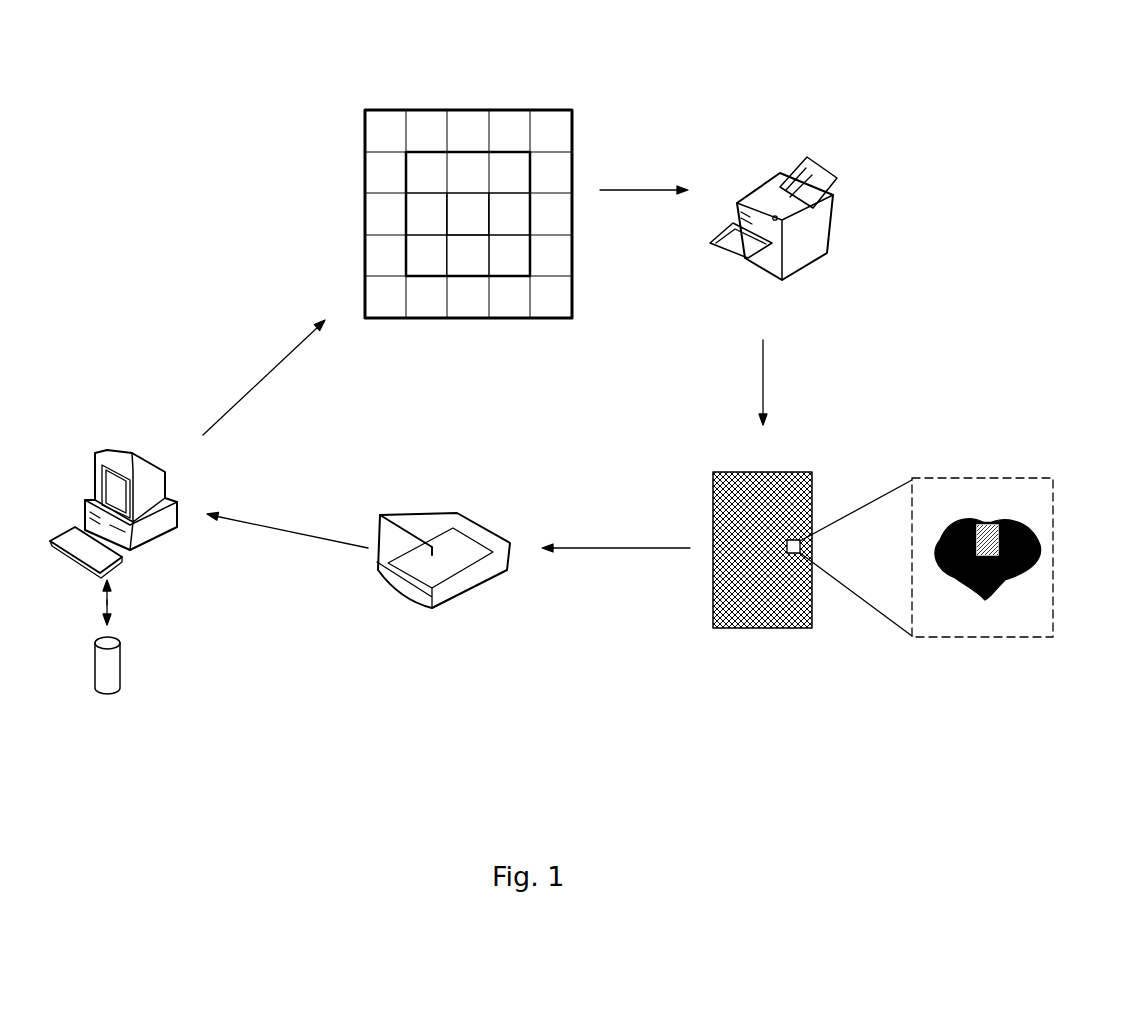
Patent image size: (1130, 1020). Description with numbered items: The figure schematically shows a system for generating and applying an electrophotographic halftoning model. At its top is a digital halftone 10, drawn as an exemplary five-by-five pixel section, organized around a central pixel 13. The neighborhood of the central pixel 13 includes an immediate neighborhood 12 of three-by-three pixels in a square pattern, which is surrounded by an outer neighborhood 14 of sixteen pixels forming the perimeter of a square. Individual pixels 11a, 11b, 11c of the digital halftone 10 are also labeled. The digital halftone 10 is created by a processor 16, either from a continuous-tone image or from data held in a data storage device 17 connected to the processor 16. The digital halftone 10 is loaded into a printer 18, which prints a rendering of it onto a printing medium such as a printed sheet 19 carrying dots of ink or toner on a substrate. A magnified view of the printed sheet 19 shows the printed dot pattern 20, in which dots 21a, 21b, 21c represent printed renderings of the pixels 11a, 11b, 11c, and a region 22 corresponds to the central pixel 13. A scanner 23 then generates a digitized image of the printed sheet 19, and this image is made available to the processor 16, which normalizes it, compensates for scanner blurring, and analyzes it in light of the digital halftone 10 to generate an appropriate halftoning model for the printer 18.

The digital halftone 10 is at (606, 93).
The pixel 11a is at (471, 252).
The pixel 11b is at (420, 210).
The pixel 11c is at (523, 217).
The immediate neighborhood 12 is at (467, 155).
The central pixel 13 is at (457, 218).
The outer neighborhood 14 is at (411, 120).
The processor 16 is at (140, 450).
The data storage device 17 is at (123, 665).
The printer 18 is at (770, 182).
The printed sheet 19 is at (760, 628).
The printed dot pattern 20 is at (1012, 478).
The dot 21a is at (1000, 593).
The dot 21b is at (960, 525).
The dot 21c is at (1035, 545).
The region 22 is at (985, 523).
The scanner 23 is at (455, 513).